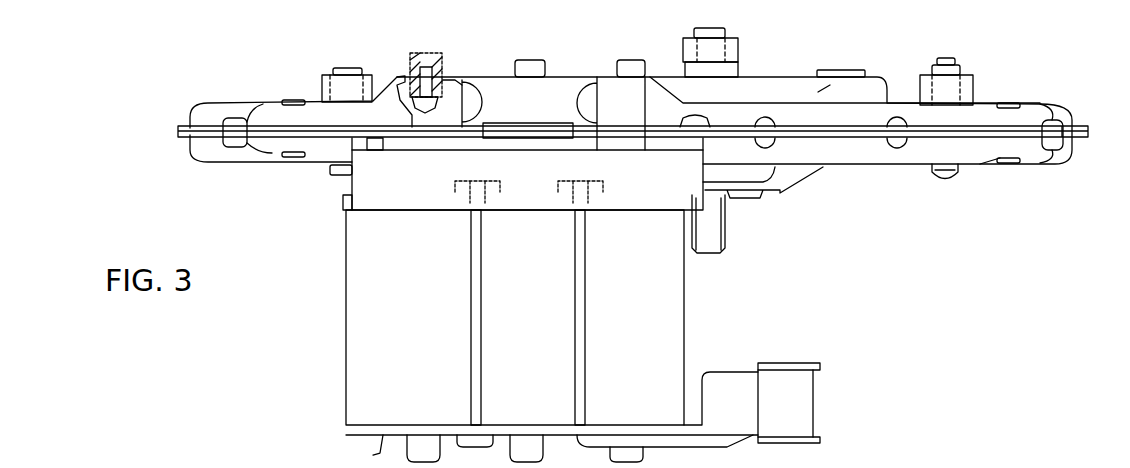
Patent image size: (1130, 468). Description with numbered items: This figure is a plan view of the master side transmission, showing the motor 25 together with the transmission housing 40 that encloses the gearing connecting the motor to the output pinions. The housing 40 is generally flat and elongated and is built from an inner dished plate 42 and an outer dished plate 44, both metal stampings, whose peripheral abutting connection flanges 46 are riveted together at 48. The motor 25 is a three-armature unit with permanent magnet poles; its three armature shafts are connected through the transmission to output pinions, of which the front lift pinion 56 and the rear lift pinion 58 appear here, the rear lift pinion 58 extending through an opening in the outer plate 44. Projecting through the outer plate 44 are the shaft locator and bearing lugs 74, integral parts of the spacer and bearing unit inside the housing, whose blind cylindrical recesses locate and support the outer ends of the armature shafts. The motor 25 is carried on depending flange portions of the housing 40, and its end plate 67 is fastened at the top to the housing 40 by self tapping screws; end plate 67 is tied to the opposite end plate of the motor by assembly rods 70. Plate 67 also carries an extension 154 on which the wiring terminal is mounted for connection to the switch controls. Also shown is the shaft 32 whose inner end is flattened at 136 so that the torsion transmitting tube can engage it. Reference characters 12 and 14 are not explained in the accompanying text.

The machine base 12 is at (841, 464).
The frame 14 is at (1007, 467).
The motor 25 is at (685, 335).
The shaft 32 is at (732, 30).
The transmission housing 40 is at (799, 65).
The inner dished plate 42 is at (1025, 167).
The outer dished plate 44 is at (818, 92).
The peripheral abutting connection flanges 46 is at (1084, 146).
The rivets 48 is at (895, 147).
The front lift pinion 56 is at (320, 79).
The rear lift pinion 58 is at (977, 83).
The end plate 67 is at (374, 454).
The assembly rods 70 is at (481, 310).
The shaft locator and bearing lugs 74 is at (442, 63).
The flattened shaft portion 136 is at (738, 43).
The extension 154 is at (797, 415).